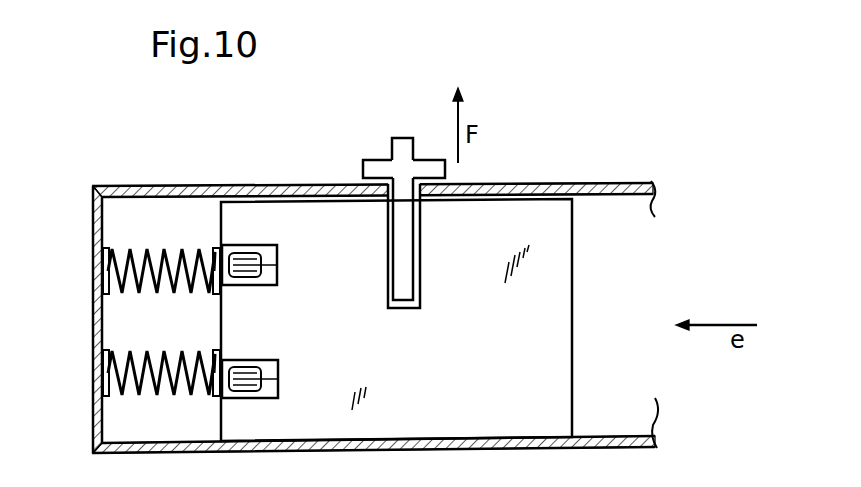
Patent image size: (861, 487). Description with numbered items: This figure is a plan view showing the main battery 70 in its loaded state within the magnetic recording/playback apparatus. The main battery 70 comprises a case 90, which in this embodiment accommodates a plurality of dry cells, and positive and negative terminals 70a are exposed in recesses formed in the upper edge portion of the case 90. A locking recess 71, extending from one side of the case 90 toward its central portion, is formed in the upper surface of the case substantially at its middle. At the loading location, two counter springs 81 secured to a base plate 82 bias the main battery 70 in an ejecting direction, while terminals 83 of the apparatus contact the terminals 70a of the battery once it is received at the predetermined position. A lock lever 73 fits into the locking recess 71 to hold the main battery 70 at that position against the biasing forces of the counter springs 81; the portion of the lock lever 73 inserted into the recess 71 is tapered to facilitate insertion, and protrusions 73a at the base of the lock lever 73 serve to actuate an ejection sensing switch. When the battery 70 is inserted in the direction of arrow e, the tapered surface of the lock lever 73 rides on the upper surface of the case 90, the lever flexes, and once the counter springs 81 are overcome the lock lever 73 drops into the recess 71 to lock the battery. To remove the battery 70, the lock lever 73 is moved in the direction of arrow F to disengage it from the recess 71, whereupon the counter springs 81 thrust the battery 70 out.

The main battery 70 is at (339, 317).
The terminals 70a is at (252, 360).
The locking recess 71 is at (403, 310).
The lock lever 73 is at (366, 188).
The protrusions 73a is at (366, 165).
The counter springs 81 is at (150, 296).
The base plate 82 is at (93, 240).
The terminals 83 is at (277, 250).
The case 90 is at (572, 278).